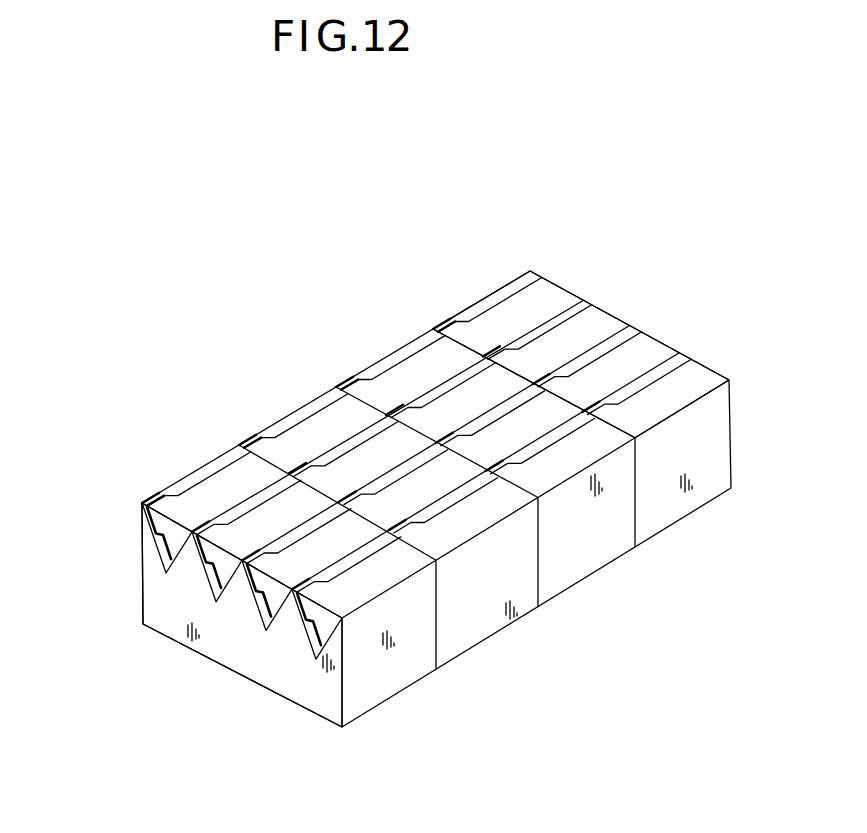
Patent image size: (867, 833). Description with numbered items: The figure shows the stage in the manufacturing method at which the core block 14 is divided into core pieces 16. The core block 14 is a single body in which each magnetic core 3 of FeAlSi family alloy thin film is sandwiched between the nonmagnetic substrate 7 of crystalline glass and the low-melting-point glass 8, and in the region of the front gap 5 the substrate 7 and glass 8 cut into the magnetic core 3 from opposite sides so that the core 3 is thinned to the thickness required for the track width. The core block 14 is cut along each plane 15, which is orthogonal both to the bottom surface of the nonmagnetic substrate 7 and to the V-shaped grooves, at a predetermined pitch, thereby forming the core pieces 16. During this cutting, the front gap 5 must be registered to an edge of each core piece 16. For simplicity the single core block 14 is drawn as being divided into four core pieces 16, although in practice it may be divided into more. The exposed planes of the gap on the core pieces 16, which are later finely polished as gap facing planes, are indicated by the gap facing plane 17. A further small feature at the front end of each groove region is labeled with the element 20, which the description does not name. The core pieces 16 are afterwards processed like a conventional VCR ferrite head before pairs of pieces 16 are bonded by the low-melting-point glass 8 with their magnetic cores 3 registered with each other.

The magnetic core 3 is at (522, 260).
The front gap 5 is at (438, 311).
The nonmagnetic substrate 7 is at (282, 620).
The low-melting-point glass 8 is at (169, 521).
The core block 14 is at (687, 516).
The plane 15 is at (627, 524).
The core piece 16 is at (498, 275).
The gap facing plane 17 is at (691, 378).
The tongue 20 is at (441, 309).